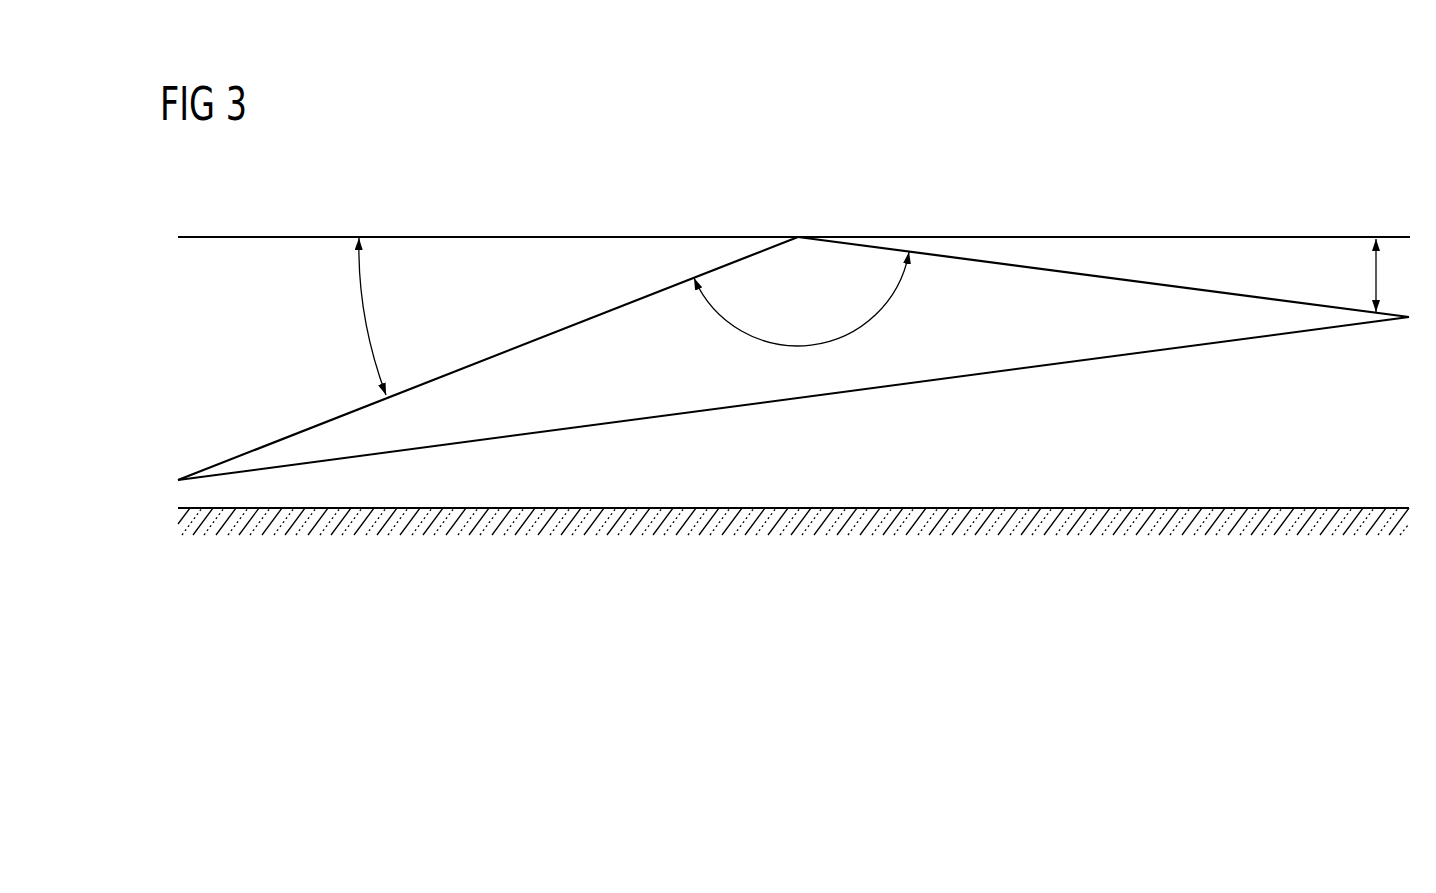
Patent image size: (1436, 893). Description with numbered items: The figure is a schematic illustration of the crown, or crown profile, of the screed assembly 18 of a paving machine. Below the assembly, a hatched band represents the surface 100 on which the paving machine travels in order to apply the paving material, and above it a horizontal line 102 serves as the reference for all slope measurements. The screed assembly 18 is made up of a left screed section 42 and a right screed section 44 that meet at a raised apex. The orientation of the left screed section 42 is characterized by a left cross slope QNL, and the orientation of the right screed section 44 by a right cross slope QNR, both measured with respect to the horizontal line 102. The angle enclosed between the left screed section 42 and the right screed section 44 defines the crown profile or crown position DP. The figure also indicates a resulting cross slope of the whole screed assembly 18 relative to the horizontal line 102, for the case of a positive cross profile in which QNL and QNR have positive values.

The screed assembly 18 is at (967, 193).
The left screed section 42 is at (266, 446).
The right screed section 44 is at (1085, 276).
The surface 100 is at (1196, 524).
The horizontal line 102 is at (232, 237).
The left cross slope QNL is at (362, 318).
The right cross slope QNR is at (1372, 275).
The crown position DP is at (803, 352).